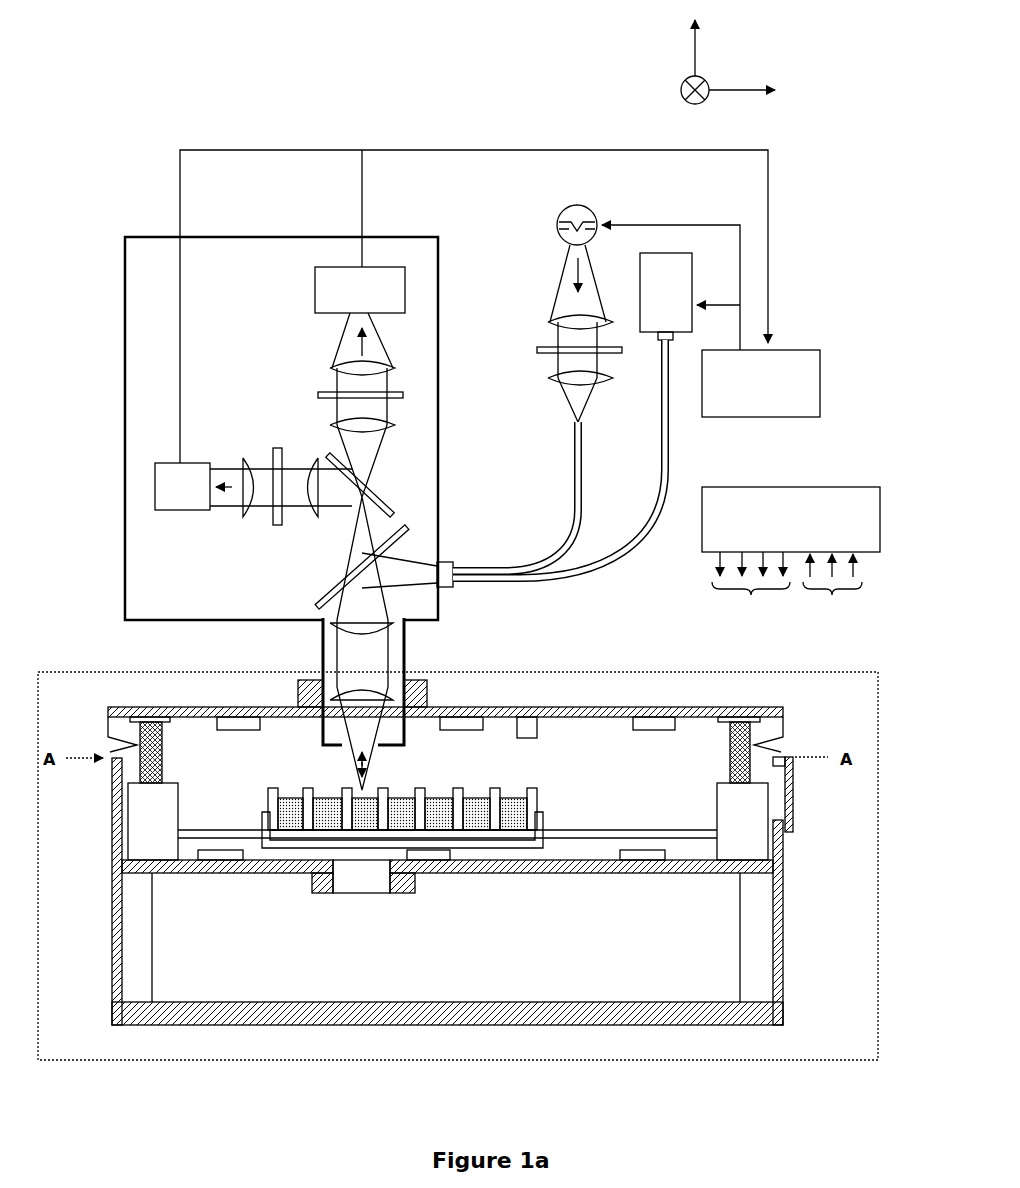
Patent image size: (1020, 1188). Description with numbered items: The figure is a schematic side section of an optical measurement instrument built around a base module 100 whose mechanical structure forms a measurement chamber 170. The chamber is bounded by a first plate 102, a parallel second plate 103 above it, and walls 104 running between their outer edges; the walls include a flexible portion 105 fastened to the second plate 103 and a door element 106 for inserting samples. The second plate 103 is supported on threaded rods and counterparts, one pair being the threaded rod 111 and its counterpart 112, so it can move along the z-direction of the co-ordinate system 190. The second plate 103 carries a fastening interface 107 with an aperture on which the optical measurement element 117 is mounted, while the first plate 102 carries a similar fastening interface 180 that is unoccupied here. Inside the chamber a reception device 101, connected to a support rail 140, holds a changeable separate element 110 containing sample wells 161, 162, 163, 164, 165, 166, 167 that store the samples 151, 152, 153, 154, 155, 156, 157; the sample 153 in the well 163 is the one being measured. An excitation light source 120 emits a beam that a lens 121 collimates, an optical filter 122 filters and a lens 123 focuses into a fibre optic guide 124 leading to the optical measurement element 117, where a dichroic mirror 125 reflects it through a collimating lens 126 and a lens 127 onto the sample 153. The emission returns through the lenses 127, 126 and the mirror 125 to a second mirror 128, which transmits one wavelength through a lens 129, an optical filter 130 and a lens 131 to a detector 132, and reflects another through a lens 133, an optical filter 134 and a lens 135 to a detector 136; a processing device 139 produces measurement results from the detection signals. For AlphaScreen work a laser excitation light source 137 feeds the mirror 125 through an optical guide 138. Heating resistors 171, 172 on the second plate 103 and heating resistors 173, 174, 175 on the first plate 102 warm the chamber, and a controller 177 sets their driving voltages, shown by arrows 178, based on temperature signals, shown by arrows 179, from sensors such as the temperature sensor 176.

The base module 100 is at (730, 1060).
The reception device 101 is at (545, 822).
The first plate 102 is at (695, 873).
The second plate 103 is at (583, 707).
The walls 104 is at (112, 938).
The flexible portion 105 is at (108, 737).
The door element 106 is at (793, 776).
The fastening interface 107 is at (298, 692).
The changeable separate element 110 is at (262, 812).
The threaded rod 111 is at (730, 770).
The counterpart 112 is at (742, 821).
The optical measurement element 117 is at (275, 237).
The excitation light source 120 is at (600, 215).
The lens 121 is at (556, 320).
The optical filter 122 is at (537, 350).
The lens 123 is at (548, 380).
The fibre optic guide 124 is at (574, 490).
The dichroic mirror 125 is at (398, 540).
The collimating lens 126 is at (357, 637).
The lens 127 is at (365, 684).
The second mirror 128 is at (385, 502).
The lens 129 is at (330, 425).
The optical filter 130 is at (318, 395).
The lens 131 is at (330, 368).
The detector 132 is at (360, 290).
The lens 133 is at (309, 518).
The optical filter 134 is at (276, 526).
The lens 135 is at (243, 515).
The detector 136 is at (182, 486).
The excitation light source 137 is at (666, 296).
The optical guide 138 is at (592, 562).
The processing device 139 is at (711, 321).
The support rail 140 is at (575, 873).
The sample 151 is at (290, 822).
The sample 152 is at (327, 822).
The sample 153 is at (365, 822).
The sample 154 is at (401, 822).
The sample 155 is at (439, 822).
The sample 156 is at (476, 822).
The sample 157 is at (513, 822).
The sample well 161 is at (272, 788).
The sample well 162 is at (310, 788).
The sample well 163 is at (383, 788).
The sample well 164 is at (420, 788).
The sample well 165 is at (457, 788).
The sample well 166 is at (495, 788).
The sample well 167 is at (532, 788).
The measurement chamber 170 is at (628, 775).
The heating resistor 171 is at (217, 724).
The heating resistor 172 is at (655, 717).
The heating resistor 173 is at (640, 873).
The heating resistor 174 is at (436, 873).
The heating resistor 175 is at (228, 873).
The temperature sensor 176 is at (527, 712).
The controller 177 is at (791, 519).
The arrows 178 is at (751, 584).
The arrows 179 is at (832, 585).
The fastening interface 180 is at (312, 885).
The co-ordinate system 190 is at (722, 42).